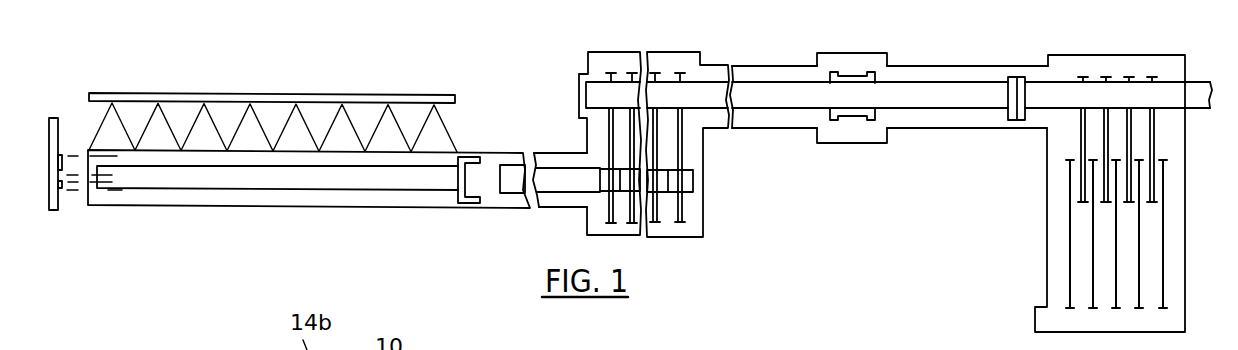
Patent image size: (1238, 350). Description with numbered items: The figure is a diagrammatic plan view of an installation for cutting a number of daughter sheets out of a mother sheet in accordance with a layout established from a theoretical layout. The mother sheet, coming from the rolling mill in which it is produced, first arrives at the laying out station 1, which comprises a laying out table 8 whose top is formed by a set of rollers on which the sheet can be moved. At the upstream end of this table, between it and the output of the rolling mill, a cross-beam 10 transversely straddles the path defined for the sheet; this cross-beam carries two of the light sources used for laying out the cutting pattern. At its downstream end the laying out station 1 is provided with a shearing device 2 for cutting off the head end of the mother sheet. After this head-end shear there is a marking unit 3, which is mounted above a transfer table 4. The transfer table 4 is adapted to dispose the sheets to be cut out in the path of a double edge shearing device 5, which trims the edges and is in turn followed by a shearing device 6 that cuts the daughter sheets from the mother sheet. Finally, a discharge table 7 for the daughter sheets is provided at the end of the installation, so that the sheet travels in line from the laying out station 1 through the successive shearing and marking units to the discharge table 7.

The laying out station 1 is at (239, 211).
The shearing device 2 is at (463, 157).
The marking unit 3 is at (696, 205).
The transfer table 4 is at (705, 148).
The double edge shearing device 5 is at (846, 133).
The shearing device 6 is at (1013, 125).
The discharge table 7 is at (1046, 257).
The laying out table 8 is at (156, 211).
The cross-beam 10 is at (53, 117).